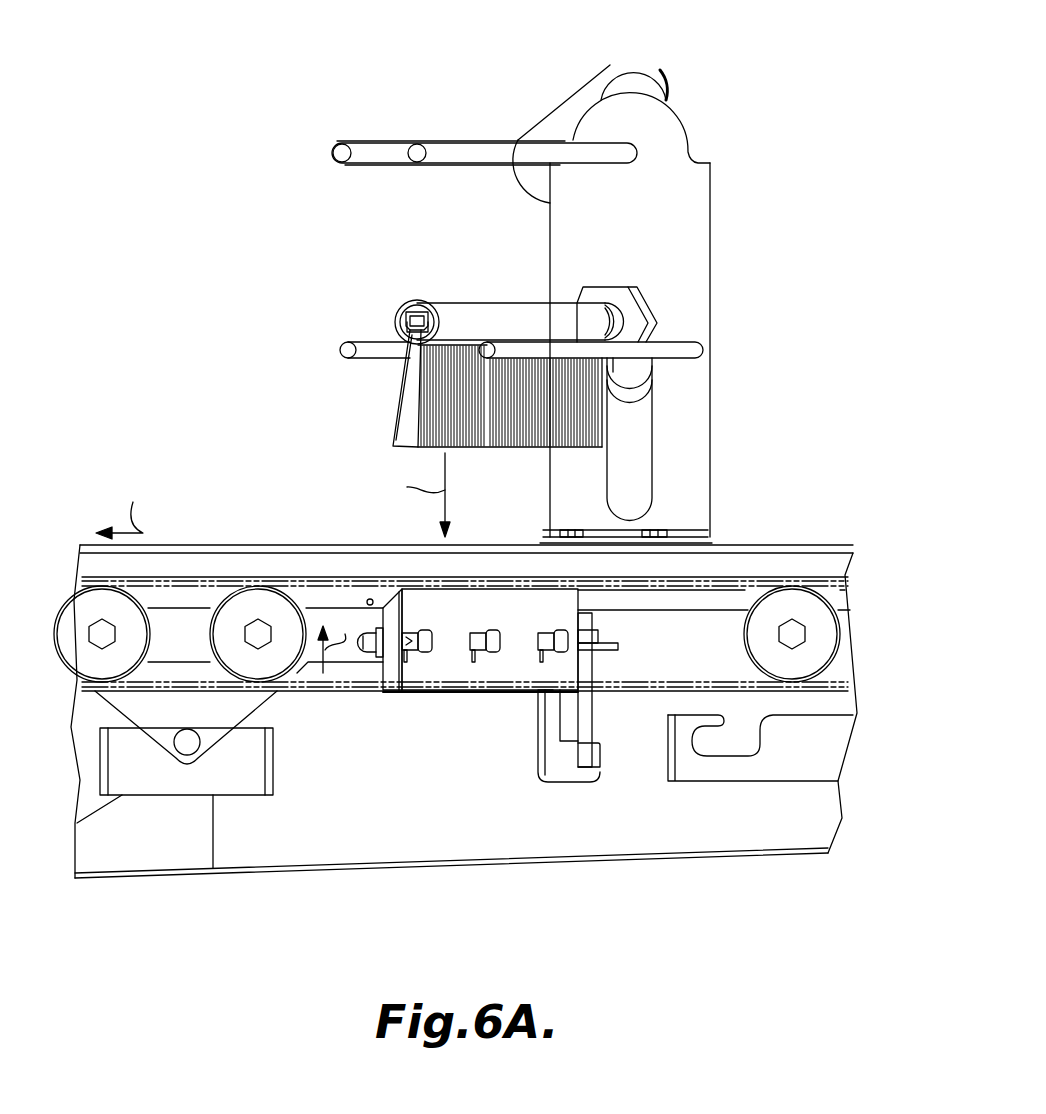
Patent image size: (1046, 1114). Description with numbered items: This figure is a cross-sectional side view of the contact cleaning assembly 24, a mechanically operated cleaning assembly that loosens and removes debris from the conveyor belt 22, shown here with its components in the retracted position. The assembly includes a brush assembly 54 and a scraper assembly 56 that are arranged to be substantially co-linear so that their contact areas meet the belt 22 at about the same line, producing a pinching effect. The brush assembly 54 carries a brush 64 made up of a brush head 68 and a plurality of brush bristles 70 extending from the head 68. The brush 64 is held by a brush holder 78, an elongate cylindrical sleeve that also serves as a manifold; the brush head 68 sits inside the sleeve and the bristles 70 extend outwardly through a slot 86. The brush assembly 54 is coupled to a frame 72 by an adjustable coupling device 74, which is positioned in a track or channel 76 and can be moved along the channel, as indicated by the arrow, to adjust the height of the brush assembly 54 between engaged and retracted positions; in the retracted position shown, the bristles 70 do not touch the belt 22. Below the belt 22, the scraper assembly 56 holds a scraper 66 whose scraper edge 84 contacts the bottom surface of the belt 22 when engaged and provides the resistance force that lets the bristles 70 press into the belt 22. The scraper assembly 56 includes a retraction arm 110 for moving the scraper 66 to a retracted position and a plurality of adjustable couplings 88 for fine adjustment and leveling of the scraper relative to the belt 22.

The conveyor belt 22 is at (773, 588).
The contact cleaning assembly 24 is at (720, 99).
The brush assembly 54 is at (391, 410).
The scraper assembly 56 is at (384, 690).
The brush 64 is at (495, 440).
The scraper 66 is at (455, 672).
The brush head 68 is at (404, 316).
The brush bristles 70 is at (410, 388).
The frame 72 is at (708, 201).
The coupling device 74 is at (637, 309).
The track or channel 76 is at (650, 427).
The brush holder 78 is at (458, 305).
The scraper edge 84 is at (396, 588).
The slot 86 is at (406, 340).
The adjustable coupling 88 is at (563, 637).
The retraction arm 110 is at (598, 744).